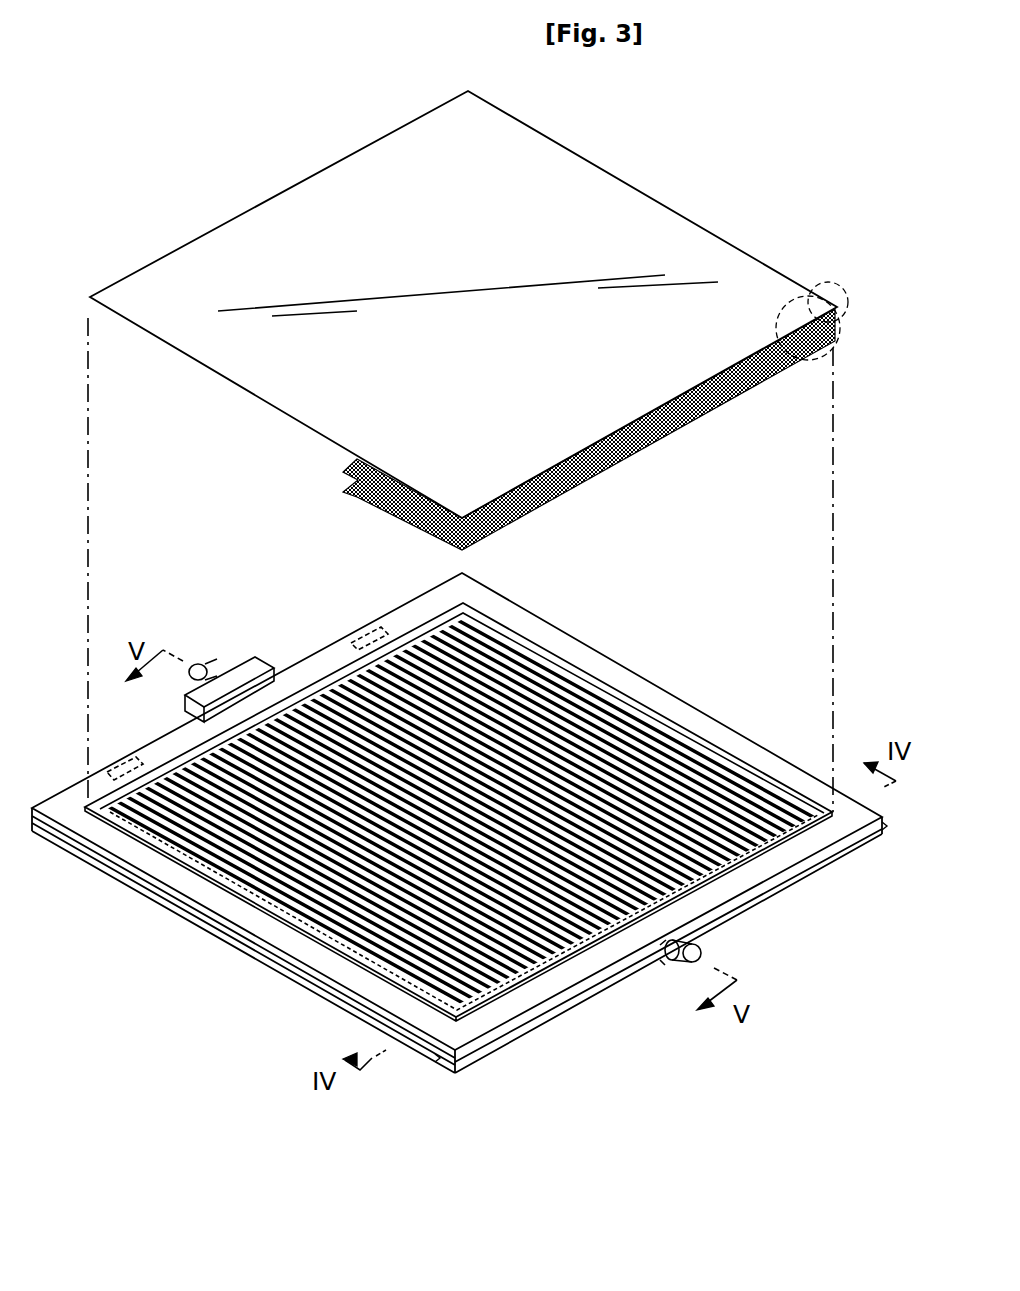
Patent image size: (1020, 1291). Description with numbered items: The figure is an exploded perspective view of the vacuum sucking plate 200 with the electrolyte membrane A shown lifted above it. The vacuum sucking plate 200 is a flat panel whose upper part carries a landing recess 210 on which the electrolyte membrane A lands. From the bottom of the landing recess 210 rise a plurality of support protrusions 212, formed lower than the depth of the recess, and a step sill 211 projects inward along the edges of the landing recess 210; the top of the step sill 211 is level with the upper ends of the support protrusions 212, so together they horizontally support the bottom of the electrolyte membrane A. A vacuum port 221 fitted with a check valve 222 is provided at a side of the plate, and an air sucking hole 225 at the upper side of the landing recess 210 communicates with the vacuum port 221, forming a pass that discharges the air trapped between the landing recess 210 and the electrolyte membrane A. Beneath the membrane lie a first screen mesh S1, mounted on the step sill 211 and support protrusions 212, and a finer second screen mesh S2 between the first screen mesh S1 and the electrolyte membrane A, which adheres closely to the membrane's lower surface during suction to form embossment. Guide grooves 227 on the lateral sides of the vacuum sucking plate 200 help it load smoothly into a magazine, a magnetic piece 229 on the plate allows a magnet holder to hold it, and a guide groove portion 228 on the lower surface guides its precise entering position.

The vacuum sucking plate 200 is at (222, 985).
The landing recess 210 is at (642, 720).
The step sill 211 is at (703, 745).
The support protrusions 212 is at (493, 640).
The vacuum port 221 is at (657, 960).
The check valve 222 is at (697, 943).
The air sucking hole 225 is at (278, 712).
The guide groove 227 is at (885, 833).
The guide groove portion 228 is at (660, 958).
The magnetic piece 229 is at (362, 624).
The electrolyte membrane A is at (596, 181).
The first screen mesh S1 is at (836, 333).
The second screen mesh S2 is at (842, 311).